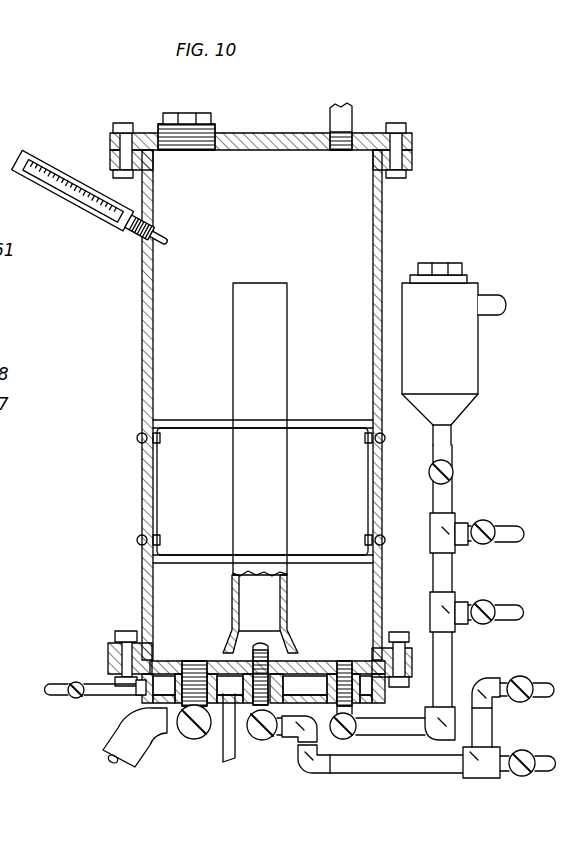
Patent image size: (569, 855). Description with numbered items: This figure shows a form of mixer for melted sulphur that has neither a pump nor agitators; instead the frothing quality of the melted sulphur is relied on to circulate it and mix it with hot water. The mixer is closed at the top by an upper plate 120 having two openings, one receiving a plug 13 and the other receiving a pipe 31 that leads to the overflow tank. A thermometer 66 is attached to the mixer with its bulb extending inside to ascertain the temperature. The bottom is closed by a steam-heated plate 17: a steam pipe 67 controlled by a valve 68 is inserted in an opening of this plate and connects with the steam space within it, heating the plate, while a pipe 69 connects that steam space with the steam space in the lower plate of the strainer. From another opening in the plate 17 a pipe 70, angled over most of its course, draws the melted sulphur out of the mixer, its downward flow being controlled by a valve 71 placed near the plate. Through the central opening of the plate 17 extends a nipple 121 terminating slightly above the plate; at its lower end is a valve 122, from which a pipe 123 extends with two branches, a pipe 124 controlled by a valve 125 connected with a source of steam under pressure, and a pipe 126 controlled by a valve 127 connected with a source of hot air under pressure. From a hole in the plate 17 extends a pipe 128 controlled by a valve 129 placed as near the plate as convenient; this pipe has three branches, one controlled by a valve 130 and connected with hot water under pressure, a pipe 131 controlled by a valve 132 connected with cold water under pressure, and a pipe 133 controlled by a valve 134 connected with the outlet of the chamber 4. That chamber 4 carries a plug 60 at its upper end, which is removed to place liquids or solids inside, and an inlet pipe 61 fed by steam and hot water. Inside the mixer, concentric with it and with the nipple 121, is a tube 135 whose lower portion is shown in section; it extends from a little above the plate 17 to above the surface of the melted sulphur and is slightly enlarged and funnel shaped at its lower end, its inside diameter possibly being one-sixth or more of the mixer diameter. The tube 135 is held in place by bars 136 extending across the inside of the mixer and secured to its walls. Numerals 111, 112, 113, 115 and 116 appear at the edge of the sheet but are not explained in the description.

The chamber 4 is at (447, 343).
The plug 13 is at (183, 127).
The steam-heated plate 17 is at (110, 665).
The pipe 31 is at (348, 115).
The plug 60 is at (441, 264).
The inlet pipe 61 is at (496, 297).
The thermometer 66 is at (77, 200).
The steam pipe 67 is at (52, 698).
The valve 68 is at (74, 684).
The pipe 69 is at (226, 761).
The pipe 70 is at (118, 746).
The valve 71 is at (190, 739).
The tube 111 is at (12, 563).
The tube 112 is at (7, 514).
The tube 113 is at (0, 483).
The tube 115 is at (0, 428).
The tube 116 is at (0, 445).
The upper plate 120 is at (412, 140).
The nipple 121 is at (258, 647).
The valve 122 is at (258, 740).
The pipe 123 is at (378, 774).
The pipe 124 is at (545, 774).
The valve 125 is at (520, 750).
The pipe 126 is at (542, 698).
The valve 127 is at (520, 676).
The pipe 128 is at (390, 721).
The valve 129 is at (503, 621).
The valve 130 is at (486, 600).
The pipe 131 is at (514, 541).
The valve 132 is at (497, 524).
The pipe 133 is at (453, 492).
The valve 134 is at (456, 468).
The tube 135 is at (260, 429).
The bars 136 is at (328, 419).